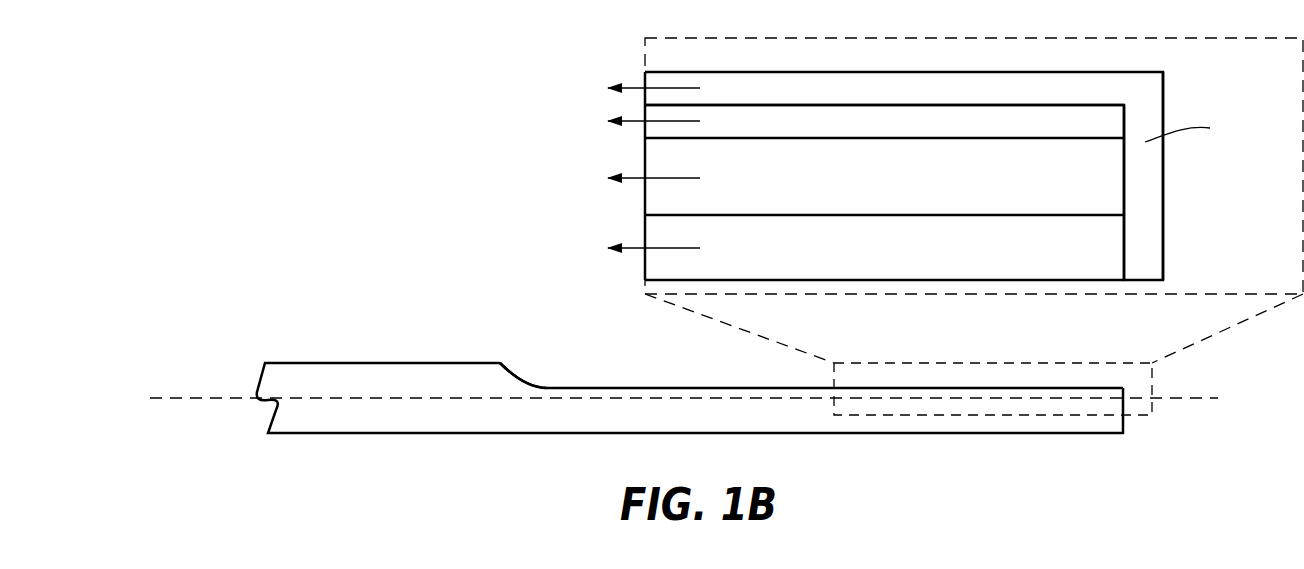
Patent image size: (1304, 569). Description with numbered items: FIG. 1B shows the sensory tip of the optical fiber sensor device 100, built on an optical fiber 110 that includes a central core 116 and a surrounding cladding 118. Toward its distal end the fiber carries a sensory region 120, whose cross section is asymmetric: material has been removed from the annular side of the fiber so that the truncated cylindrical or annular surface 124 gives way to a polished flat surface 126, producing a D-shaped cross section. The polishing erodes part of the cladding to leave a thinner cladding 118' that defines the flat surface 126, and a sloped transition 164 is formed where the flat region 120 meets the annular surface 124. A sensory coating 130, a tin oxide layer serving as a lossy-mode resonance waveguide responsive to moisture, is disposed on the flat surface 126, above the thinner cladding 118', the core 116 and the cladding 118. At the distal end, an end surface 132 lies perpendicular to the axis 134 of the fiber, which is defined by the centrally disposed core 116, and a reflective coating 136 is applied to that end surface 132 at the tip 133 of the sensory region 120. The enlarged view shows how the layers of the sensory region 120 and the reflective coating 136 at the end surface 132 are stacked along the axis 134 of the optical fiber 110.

The optical fiber sensor device 100 is at (1068, 460).
The optical fiber 110 is at (300, 435).
The core 116 is at (797, 190).
The cladding 118 is at (748, 258).
The thinner cladding 118' is at (765, 123).
The sensory region 120 is at (972, 103).
The annular surface 124 is at (280, 0).
The flat surface 126 is at (1036, 117).
The sensory coating 130 is at (797, 100).
The end surface 132 is at (1124, 178).
The tip 133 is at (1193, 35).
The axis 134 is at (198, 400).
The reflective coating 136 is at (1186, 215).
The sloped transition 164 is at (513, 375).